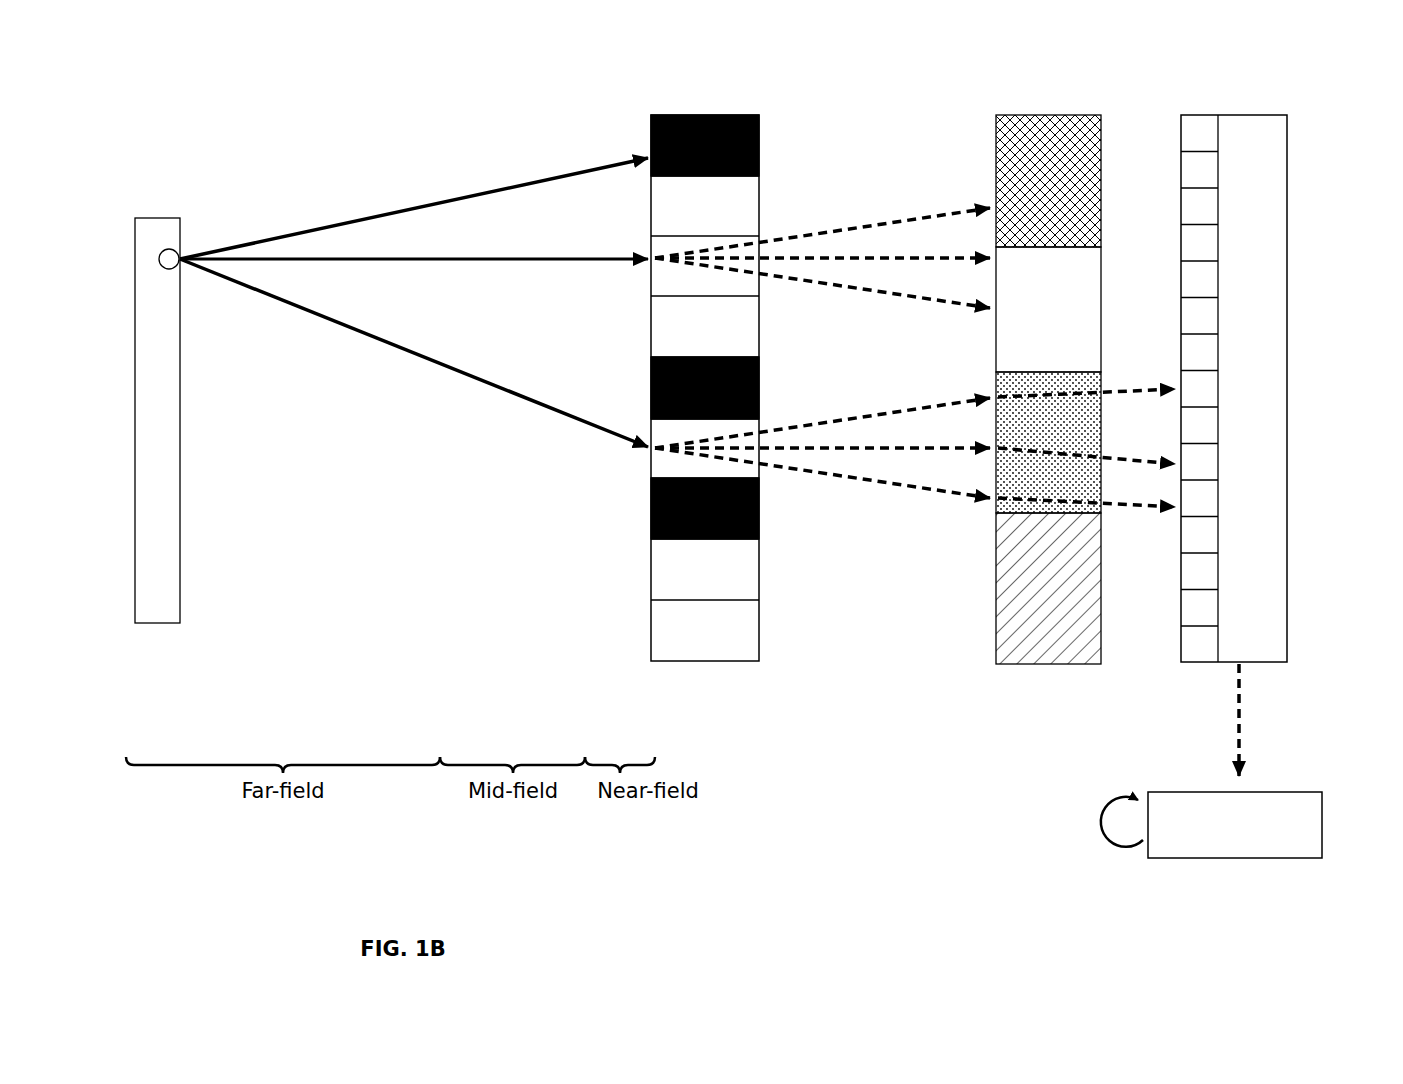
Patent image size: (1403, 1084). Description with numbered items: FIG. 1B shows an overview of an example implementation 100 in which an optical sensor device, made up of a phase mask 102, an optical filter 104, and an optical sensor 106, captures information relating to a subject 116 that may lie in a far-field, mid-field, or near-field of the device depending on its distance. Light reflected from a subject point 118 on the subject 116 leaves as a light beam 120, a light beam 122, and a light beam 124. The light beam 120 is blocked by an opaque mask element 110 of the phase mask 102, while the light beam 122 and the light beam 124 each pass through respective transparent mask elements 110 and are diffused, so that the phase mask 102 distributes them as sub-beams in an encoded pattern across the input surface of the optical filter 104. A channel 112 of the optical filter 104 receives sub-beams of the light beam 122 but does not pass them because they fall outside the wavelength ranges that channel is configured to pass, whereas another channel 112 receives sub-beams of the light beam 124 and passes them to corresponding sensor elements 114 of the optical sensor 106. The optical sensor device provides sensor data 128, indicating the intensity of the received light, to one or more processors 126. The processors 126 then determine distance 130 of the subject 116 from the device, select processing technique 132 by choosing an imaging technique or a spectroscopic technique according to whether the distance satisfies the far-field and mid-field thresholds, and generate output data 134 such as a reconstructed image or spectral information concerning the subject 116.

The example implementation 100 is at (255, 64).
The phase mask 102 is at (632, 401).
The optical filter 104 is at (955, 403).
The optical sensor 106 is at (1169, 403).
The mask elements 110 is at (645, 524).
The channel 112 is at (1016, 516).
The sensor element 114 is at (1192, 609).
The subject 116 is at (167, 391).
The subject point 118 is at (169, 278).
The light beam 120 is at (414, 195).
The light beam 122 is at (414, 290).
The light beam 124 is at (414, 354).
The processors 126 is at (1211, 825).
The sensor data 128 is at (1309, 720).
The determine distance 130 is at (965, 804).
The select processing technique 132 is at (965, 874).
The generate output data 134 is at (968, 940).